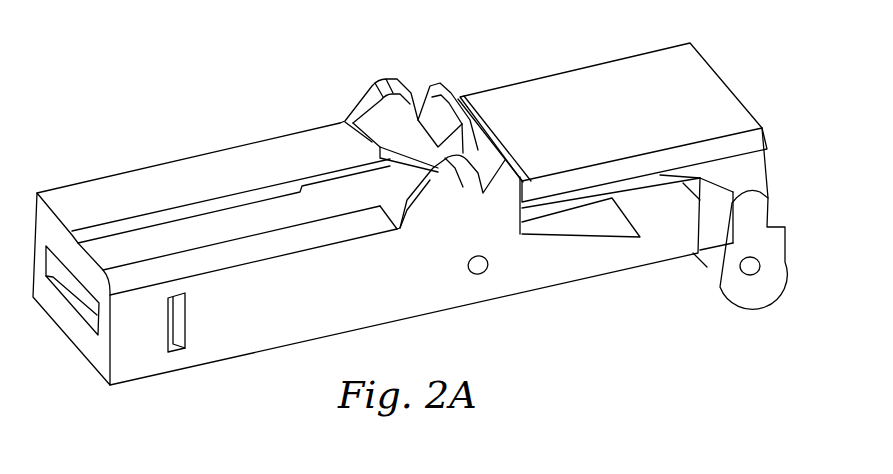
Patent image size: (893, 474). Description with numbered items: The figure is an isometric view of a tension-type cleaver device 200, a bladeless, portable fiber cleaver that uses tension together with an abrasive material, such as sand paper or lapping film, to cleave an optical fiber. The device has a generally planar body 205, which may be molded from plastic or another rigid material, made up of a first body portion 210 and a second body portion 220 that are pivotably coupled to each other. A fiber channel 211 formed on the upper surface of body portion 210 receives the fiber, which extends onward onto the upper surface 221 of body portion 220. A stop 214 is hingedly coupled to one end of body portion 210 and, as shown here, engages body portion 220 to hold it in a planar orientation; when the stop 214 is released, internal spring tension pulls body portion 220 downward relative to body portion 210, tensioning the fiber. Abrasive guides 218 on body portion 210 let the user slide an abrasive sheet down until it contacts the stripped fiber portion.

The tension-type cleaver device 200 is at (233, 64).
The body 205 is at (121, 172).
The first body portion 210 is at (228, 350).
The fiber channel 211 is at (218, 190).
The stop 214 is at (736, 284).
The abrasive guide 218 is at (427, 84).
The second body portion 220 is at (645, 167).
The upper surface 221 is at (567, 88).